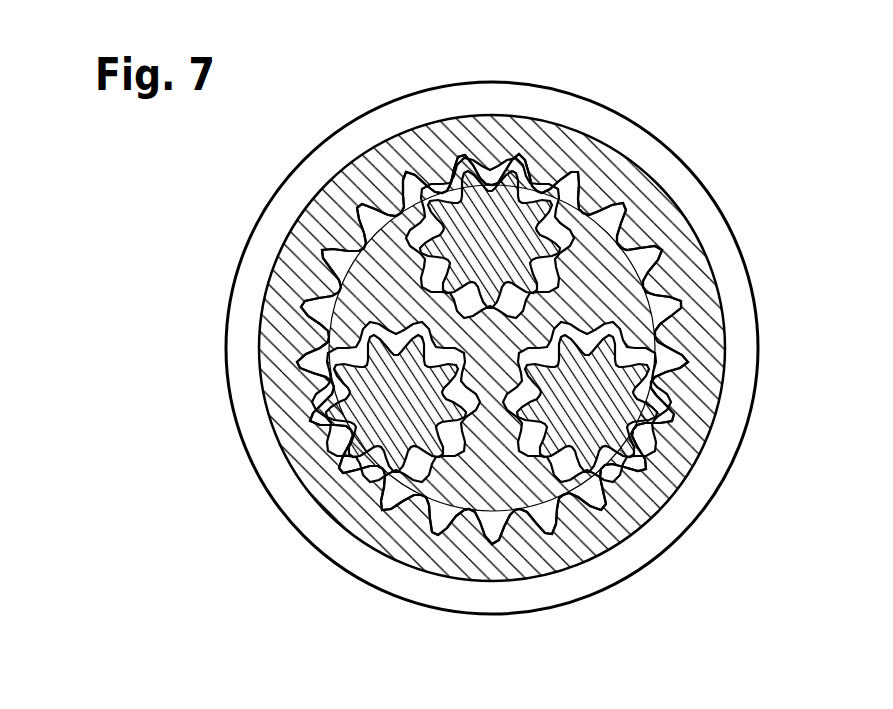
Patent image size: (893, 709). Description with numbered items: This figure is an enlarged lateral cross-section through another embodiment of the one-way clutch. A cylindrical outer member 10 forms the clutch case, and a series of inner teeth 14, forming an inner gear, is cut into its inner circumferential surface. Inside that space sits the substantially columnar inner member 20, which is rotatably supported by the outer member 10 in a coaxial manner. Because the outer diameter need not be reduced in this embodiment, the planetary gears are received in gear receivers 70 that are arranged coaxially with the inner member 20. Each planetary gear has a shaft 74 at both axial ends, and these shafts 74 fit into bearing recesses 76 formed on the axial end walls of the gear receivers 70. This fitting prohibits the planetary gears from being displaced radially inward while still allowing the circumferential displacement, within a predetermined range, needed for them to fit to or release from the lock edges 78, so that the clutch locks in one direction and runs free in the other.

The outer member 10 is at (676, 222).
The inner teeth 14 is at (657, 284).
The inner member 20 is at (607, 243).
The gear receiver 70 is at (413, 295).
The shaft 74 is at (580, 178).
The bearing recess 76 is at (625, 382).
The lock edge 78 is at (427, 303).